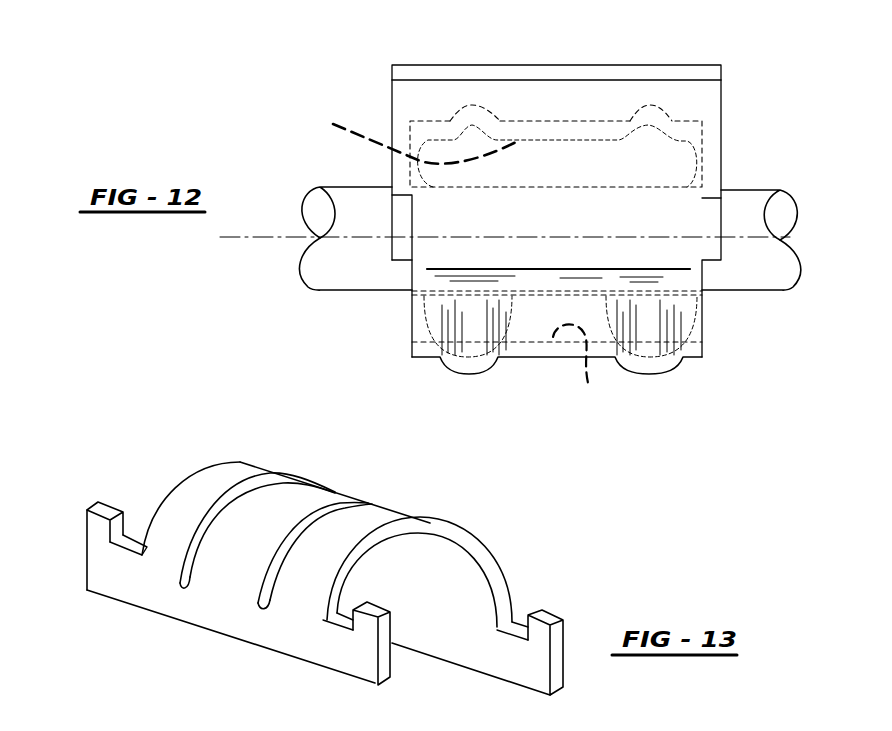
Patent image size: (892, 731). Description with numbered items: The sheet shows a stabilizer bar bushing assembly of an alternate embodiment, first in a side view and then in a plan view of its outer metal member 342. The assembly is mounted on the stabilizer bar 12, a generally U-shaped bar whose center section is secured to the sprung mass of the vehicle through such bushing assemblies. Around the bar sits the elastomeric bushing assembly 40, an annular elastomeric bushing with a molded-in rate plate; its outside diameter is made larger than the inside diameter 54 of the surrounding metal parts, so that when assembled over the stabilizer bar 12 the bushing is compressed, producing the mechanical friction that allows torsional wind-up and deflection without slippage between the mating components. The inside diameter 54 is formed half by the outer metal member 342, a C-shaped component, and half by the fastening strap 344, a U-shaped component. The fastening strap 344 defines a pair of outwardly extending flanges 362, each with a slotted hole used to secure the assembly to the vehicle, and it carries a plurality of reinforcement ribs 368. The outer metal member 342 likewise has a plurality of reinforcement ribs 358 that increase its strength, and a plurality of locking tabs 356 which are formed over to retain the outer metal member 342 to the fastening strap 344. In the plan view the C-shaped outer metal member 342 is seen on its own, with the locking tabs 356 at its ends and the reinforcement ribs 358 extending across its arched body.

In FIG. 12, the stabilizer bar 12 is at (360, 277).
In FIG. 12, the elastomeric bushing assembly 40 is at (683, 163).
In FIG. 12, the inside diameter 54 is at (461, 252).
In FIG. 12, the outer metal member 342 is at (570, 130).
In FIG. 13, the outer metal member 342 is at (252, 434).
In FIG. 12, the fastening strap 344 is at (548, 356).
In FIG. 13, the locking tabs 356 is at (110, 507).
In FIG. 12, the reinforcement ribs 358 is at (653, 115).
In FIG. 13, the reinforcement ribs 358 is at (186, 588).
In FIG. 12, the flanges 362 is at (422, 74).
In FIG. 12, the reinforcement ribs 368 is at (478, 366).